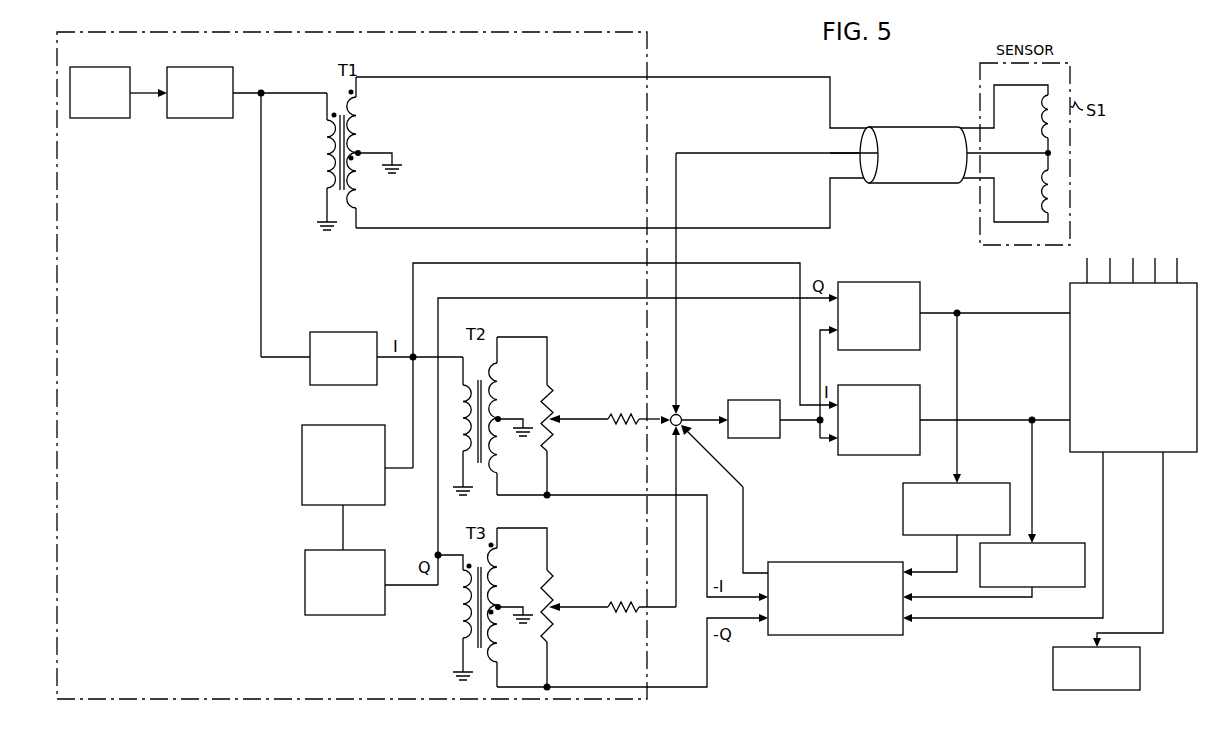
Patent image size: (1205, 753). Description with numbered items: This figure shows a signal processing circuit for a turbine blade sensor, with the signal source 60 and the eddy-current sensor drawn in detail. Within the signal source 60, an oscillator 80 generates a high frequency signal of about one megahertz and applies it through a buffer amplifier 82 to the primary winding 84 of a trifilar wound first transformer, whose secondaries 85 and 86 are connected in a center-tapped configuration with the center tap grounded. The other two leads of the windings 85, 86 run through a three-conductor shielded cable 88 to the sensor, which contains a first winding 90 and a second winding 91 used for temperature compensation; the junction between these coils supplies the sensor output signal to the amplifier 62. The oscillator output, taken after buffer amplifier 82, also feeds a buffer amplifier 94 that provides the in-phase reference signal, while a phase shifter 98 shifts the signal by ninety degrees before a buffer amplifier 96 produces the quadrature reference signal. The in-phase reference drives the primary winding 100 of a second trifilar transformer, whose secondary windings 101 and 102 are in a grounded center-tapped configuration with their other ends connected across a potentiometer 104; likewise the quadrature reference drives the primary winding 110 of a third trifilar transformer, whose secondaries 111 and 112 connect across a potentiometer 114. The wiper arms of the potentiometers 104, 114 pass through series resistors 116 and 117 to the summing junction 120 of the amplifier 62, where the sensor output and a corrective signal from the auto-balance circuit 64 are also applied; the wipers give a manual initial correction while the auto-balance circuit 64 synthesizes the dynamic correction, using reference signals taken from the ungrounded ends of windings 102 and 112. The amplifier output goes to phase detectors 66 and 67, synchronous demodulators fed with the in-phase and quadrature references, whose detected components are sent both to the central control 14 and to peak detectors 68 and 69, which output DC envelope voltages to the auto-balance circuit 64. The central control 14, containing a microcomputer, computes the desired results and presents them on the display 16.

The central control 14 is at (1087, 454).
The display 16 is at (1053, 670).
The signal source 60 is at (586, 32).
The amplifier 62 is at (763, 393).
The auto-balance circuit 64 is at (830, 562).
The phase detector 66 is at (886, 385).
The phase detector 67 is at (886, 282).
The peak detector 68 is at (1045, 543).
The peak detector 69 is at (975, 483).
The oscillator 80 is at (103, 67).
The buffer amplifier 82 is at (202, 67).
The primary winding 84 is at (324, 162).
The secondary winding 85 is at (364, 116).
The secondary winding 86 is at (362, 192).
The three-conductor shielded cable 88 is at (900, 127).
The first winding 90 is at (1039, 120).
The second winding 91 is at (1039, 196).
The buffer amplifier 94 is at (344, 332).
The buffer amplifier 96 is at (305, 579).
The phase shifter 98 is at (302, 467).
The primary winding 100 is at (472, 427).
The secondary winding 101 is at (500, 393).
The secondary winding 102 is at (500, 462).
The potentiometer 104 is at (545, 386).
The primary winding 110 is at (467, 610).
The secondary winding 111 is at (501, 572).
The secondary winding 112 is at (501, 652).
The potentiometer 114 is at (553, 584).
The series resistor 116 is at (617, 418).
The series resistor 117 is at (620, 612).
The summing junction 120 is at (683, 412).